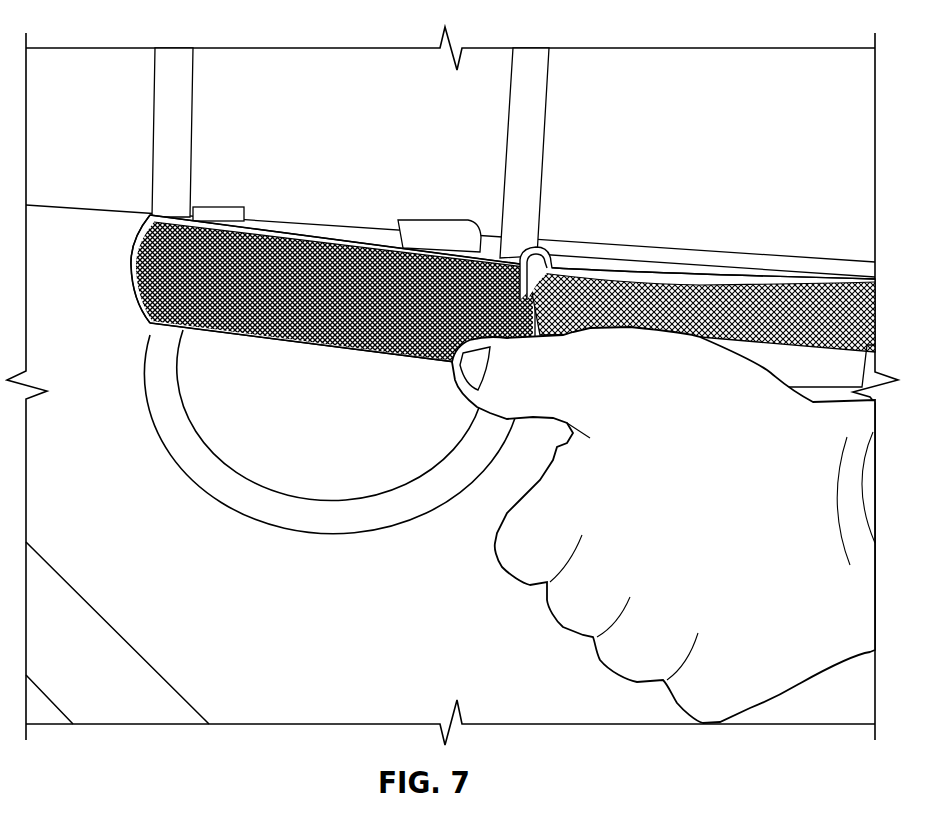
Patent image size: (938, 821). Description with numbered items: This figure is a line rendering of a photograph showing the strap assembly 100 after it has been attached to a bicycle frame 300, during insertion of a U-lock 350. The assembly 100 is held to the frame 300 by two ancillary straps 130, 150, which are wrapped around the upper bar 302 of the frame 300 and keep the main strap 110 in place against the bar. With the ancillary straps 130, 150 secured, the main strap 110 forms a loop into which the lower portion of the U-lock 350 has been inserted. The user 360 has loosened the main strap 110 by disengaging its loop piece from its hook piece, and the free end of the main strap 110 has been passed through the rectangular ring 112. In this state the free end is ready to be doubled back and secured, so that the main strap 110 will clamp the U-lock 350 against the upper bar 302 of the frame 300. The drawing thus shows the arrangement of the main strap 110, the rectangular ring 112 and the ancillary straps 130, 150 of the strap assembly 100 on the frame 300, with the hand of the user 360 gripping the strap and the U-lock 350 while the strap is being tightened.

The strap assembly 100 is at (272, 353).
The main strap 110 is at (145, 322).
The rectangular ring 112 is at (548, 248).
The ancillary strap 130 is at (213, 210).
The ancillary strap 150 is at (442, 238).
The bicycle frame 300 is at (749, 242).
The upper bar 302 is at (88, 217).
The U-lock 350 is at (538, 122).
The user 360 is at (545, 624).